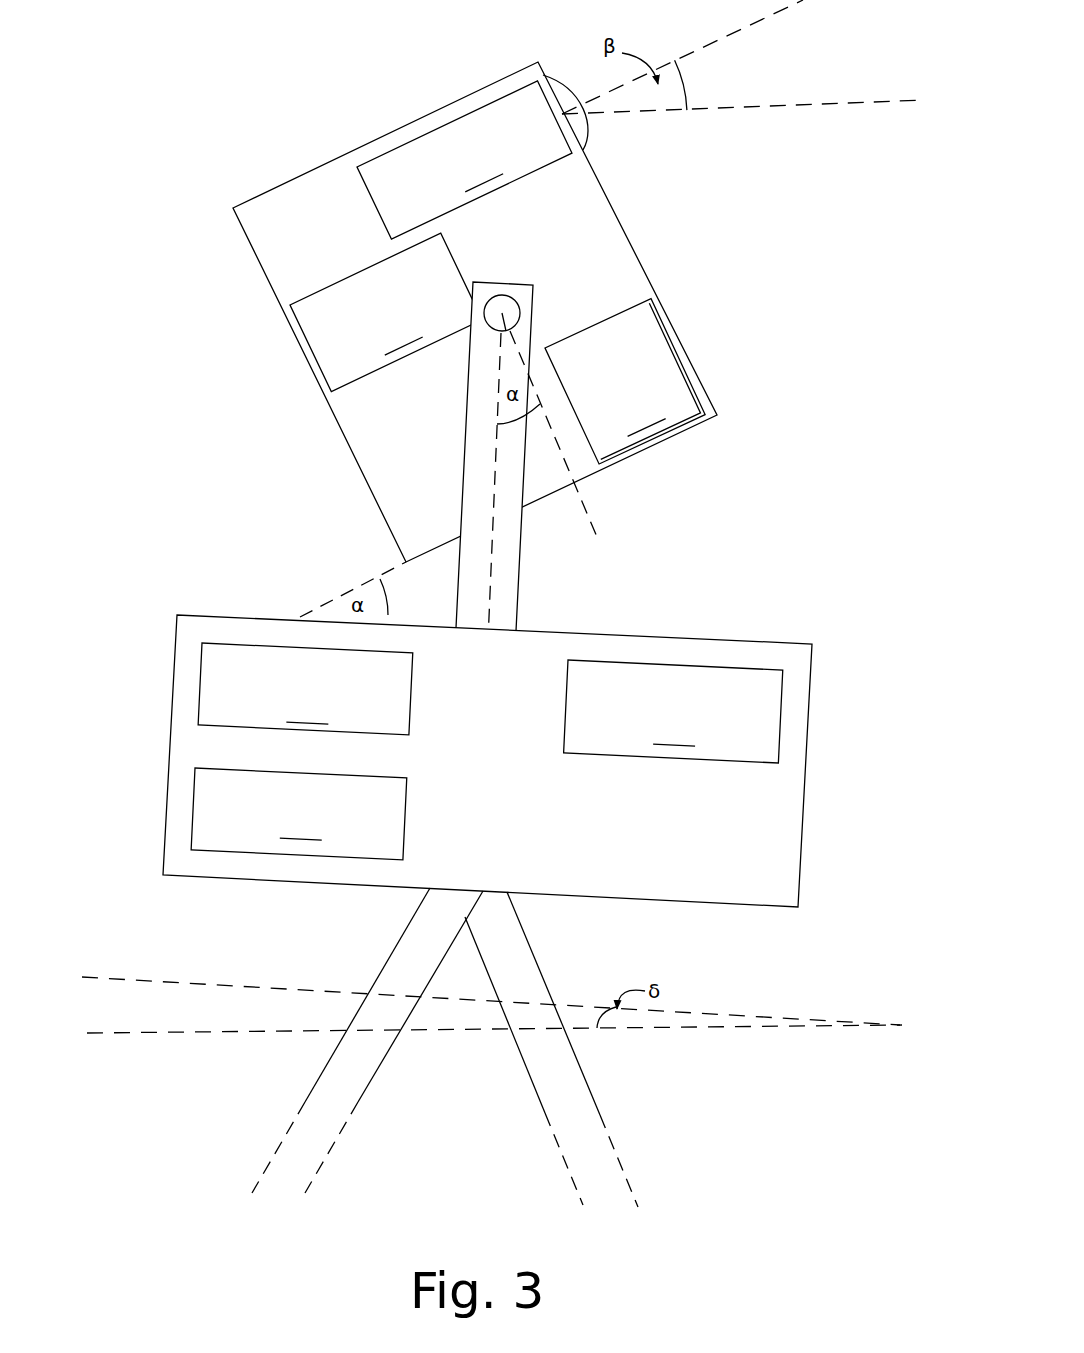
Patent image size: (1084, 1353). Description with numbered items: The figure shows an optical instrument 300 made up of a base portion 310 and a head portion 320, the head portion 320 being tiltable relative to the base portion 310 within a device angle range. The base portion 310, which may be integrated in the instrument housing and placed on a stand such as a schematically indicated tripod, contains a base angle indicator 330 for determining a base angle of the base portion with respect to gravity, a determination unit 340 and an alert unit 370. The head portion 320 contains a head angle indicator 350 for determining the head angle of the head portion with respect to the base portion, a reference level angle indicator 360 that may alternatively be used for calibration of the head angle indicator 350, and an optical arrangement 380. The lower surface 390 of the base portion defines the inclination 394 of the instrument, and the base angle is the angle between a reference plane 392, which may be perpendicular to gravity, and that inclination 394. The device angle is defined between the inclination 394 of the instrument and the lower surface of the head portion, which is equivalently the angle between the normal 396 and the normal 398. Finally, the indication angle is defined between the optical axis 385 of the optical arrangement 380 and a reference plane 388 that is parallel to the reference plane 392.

The optical instrument 300 is at (226, 143).
The base portion 310 is at (807, 757).
The head portion 320 is at (632, 250).
The base angle indicator 330 is at (673, 711).
The determination unit 340 is at (305, 689).
The head angle indicator 350 is at (625, 381).
The reference level angle indicator 360 is at (386, 312).
The alert unit 370 is at (299, 814).
The optical arrangement 380 is at (464, 160).
The optical axis 385 is at (695, 55).
The reference plane 388 is at (777, 108).
The lower surface of the base portion 390 is at (568, 895).
The reference plane 392 is at (637, 1031).
The inclination of the instrument 394 is at (687, 1008).
The normal 396 is at (497, 551).
The normal 398 is at (582, 500).